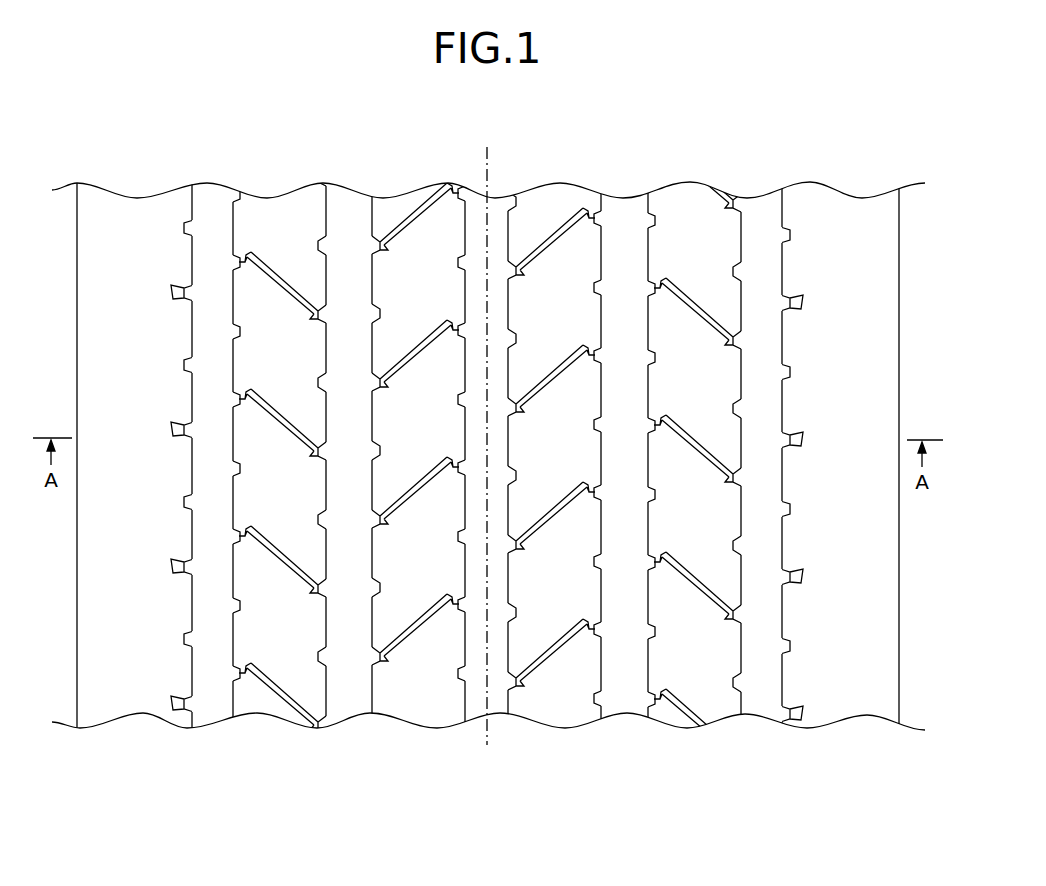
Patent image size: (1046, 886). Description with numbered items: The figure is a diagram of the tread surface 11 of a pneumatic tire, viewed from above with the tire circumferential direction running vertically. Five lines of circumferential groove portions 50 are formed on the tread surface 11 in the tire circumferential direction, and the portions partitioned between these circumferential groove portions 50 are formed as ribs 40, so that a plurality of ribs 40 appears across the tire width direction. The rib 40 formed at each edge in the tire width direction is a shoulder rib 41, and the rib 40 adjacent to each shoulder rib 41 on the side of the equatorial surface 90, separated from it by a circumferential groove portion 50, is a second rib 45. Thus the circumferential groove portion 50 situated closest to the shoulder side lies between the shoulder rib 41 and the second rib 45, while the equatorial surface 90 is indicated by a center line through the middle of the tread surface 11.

The tread surface 11 is at (118, 703).
The rib 40 is at (409, 212).
The shoulder rib 41 is at (112, 212).
The second rib 45 is at (278, 212).
The circumferential groove portion 50 is at (217, 703).
The equatorial surface 90 is at (483, 163).